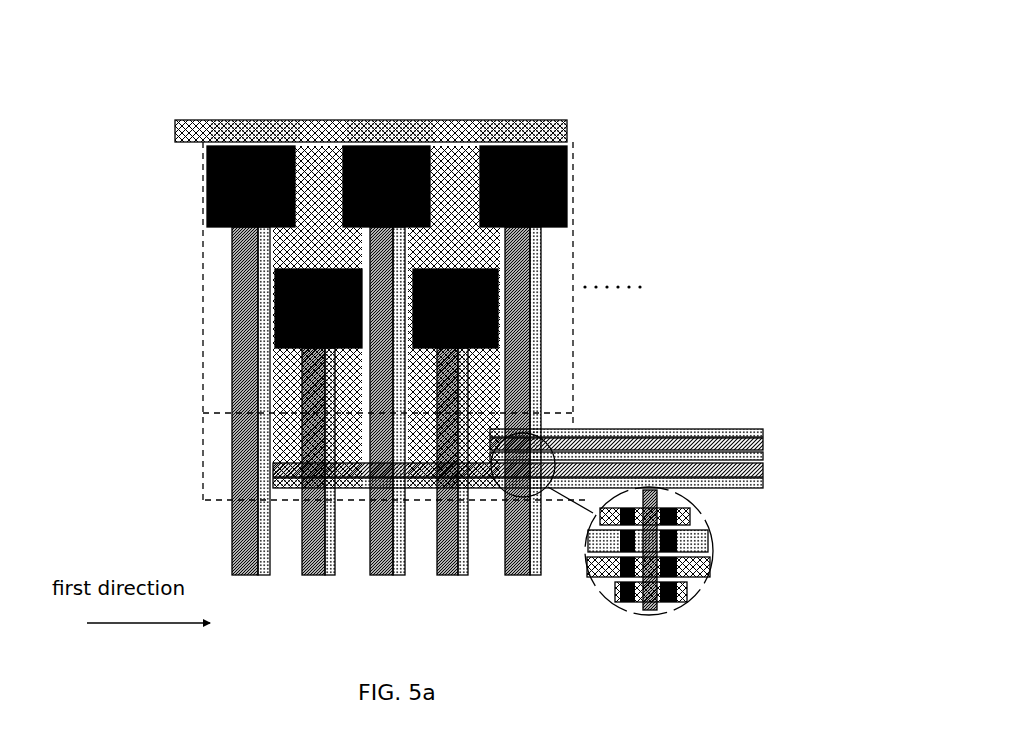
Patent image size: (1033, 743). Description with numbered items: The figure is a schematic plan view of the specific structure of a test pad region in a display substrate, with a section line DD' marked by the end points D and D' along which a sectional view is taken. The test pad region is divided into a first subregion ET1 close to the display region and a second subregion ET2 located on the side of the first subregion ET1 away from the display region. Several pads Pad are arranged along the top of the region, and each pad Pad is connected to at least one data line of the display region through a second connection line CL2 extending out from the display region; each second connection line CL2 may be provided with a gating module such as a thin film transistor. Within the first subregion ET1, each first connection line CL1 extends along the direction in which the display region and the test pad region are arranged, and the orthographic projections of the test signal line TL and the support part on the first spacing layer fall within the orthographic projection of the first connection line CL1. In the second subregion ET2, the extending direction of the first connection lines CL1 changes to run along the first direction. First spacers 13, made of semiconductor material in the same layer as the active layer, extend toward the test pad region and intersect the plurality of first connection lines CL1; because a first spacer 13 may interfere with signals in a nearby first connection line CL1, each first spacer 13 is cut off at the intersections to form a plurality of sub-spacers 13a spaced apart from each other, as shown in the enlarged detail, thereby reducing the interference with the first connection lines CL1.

The second connection line CL2 is at (510, 127).
The pad Pad is at (573, 182).
The first subregion ET1 is at (203, 333).
The second subregion ET2 is at (203, 425).
The first connection line CL1 is at (670, 448).
The test signal line TL is at (388, 572).
The first spacer 13 is at (410, 573).
The sub-spacer 13a is at (687, 597).
The section line DD' D is at (217, 507).
The section line DD' D' is at (281, 516).